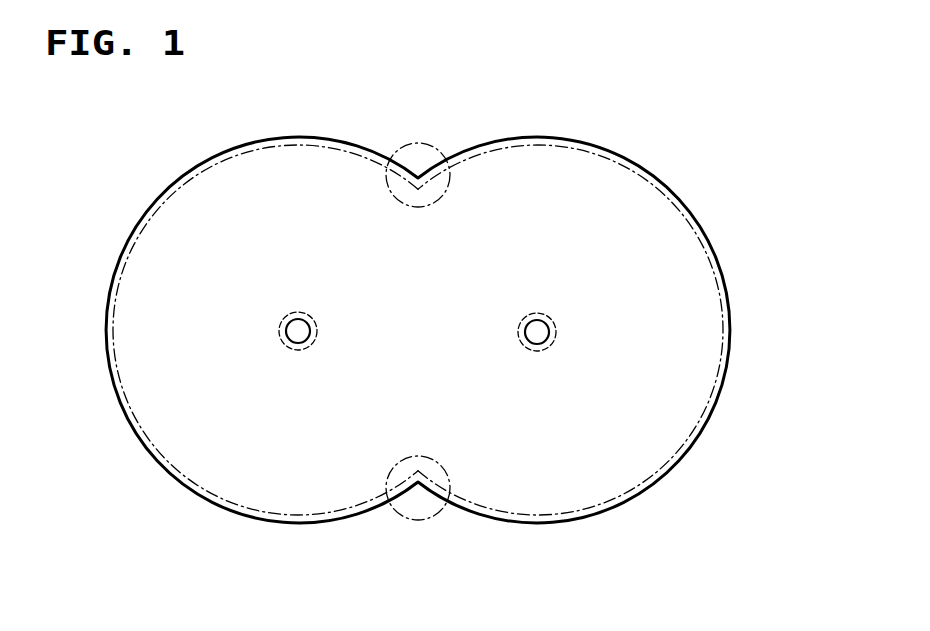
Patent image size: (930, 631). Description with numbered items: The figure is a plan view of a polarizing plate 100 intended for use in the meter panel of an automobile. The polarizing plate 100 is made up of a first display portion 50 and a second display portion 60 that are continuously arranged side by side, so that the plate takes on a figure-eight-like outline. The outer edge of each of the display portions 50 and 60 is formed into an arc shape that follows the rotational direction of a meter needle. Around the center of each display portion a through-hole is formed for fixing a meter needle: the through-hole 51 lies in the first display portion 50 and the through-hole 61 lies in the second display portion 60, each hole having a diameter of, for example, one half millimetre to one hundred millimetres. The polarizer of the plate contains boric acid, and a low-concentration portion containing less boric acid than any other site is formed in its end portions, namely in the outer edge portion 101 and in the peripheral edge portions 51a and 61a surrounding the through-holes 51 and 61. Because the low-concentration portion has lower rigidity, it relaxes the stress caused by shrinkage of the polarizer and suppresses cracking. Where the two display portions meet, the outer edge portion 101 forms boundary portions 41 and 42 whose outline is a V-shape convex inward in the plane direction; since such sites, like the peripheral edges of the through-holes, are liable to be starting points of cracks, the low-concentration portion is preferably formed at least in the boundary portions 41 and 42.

The polarizing plate 100 is at (750, 137).
The outer edge portion 101 is at (726, 362).
The first display portion 50 is at (160, 288).
The through-hole 51 is at (292, 314).
The peripheral edge portion 51a is at (283, 323).
The second display portion 60 is at (672, 253).
The through-hole 61 is at (549, 346).
The peripheral edge portion 61a is at (552, 333).
The boundary portion 41 is at (420, 172).
The boundary portion 42 is at (418, 484).